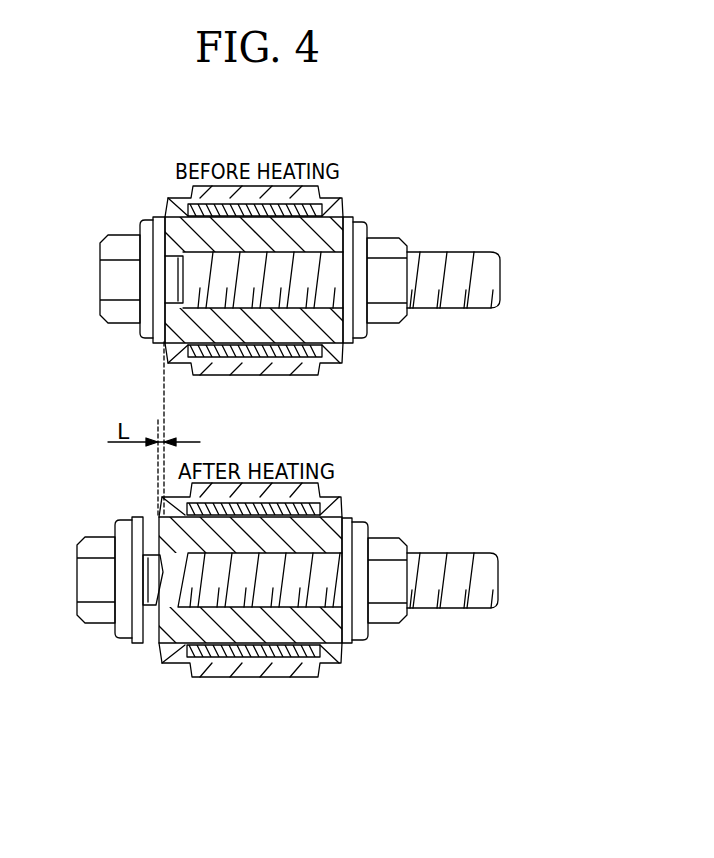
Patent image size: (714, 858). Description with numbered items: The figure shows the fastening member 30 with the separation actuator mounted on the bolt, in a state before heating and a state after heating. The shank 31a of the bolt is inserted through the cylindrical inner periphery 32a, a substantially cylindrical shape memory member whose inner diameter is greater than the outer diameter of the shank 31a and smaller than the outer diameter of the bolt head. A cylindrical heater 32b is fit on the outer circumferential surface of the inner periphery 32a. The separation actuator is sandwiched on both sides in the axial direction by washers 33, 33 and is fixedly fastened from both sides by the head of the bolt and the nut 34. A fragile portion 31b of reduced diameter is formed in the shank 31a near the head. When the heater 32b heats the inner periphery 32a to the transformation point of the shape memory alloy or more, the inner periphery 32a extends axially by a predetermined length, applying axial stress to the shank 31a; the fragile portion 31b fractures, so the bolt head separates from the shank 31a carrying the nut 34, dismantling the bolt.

The fastening member 30 is at (438, 198).
The shank 31a is at (305, 245).
The fragile portion 31b is at (180, 303).
The cylindrical inner periphery 32a is at (165, 217).
The cylindrical heater 32b is at (192, 188).
The washer 33 is at (348, 344).
The nut 34 is at (360, 339).